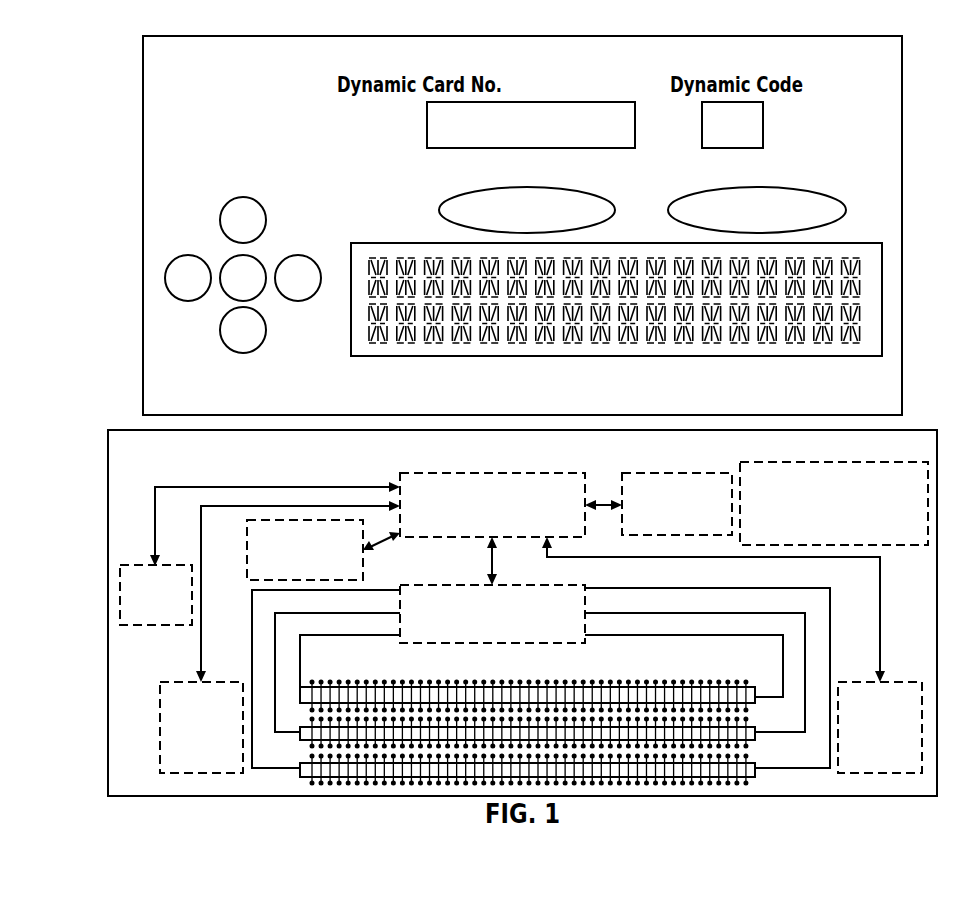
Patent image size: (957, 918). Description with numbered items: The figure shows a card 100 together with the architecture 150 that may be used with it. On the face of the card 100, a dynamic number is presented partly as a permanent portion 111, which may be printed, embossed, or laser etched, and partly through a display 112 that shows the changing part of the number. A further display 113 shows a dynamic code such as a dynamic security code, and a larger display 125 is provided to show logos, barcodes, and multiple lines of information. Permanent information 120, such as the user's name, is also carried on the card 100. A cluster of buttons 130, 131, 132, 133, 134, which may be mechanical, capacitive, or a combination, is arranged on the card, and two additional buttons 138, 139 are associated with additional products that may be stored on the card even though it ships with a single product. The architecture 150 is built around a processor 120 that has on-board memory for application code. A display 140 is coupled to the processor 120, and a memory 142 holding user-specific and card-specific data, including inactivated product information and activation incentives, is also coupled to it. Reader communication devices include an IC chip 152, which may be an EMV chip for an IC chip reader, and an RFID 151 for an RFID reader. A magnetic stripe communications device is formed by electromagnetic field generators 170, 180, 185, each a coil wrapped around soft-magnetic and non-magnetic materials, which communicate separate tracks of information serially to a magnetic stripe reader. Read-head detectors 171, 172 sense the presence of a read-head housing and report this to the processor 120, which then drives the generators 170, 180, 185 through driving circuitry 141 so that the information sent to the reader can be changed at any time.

The card 100 is at (143, 232).
The permanent portion 111 is at (360, 136).
The display 112 is at (480, 149).
The display 113 is at (738, 149).
The permanent information / processor 120 is at (192, 392).
The display 125 is at (877, 352).
The button 130 is at (238, 256).
The button 131 is at (186, 255).
The button 132 is at (321, 280).
The button 133 is at (247, 197).
The button 134 is at (221, 330).
The button 138 is at (440, 208).
The button 139 is at (669, 208).
The display 140 is at (640, 473).
The driving circuitry 141 is at (448, 585).
The memory 142 is at (870, 462).
The architecture 150 is at (109, 608).
The RFID 151 is at (253, 548).
The IC chip 152 is at (182, 628).
The electromagnetic field generator 170 is at (402, 672).
The read-head detector 171 is at (190, 682).
The read-head detector 172 is at (838, 772).
The electromagnetic field generator 180 is at (300, 727).
The electromagnetic field generator 185 is at (300, 763).